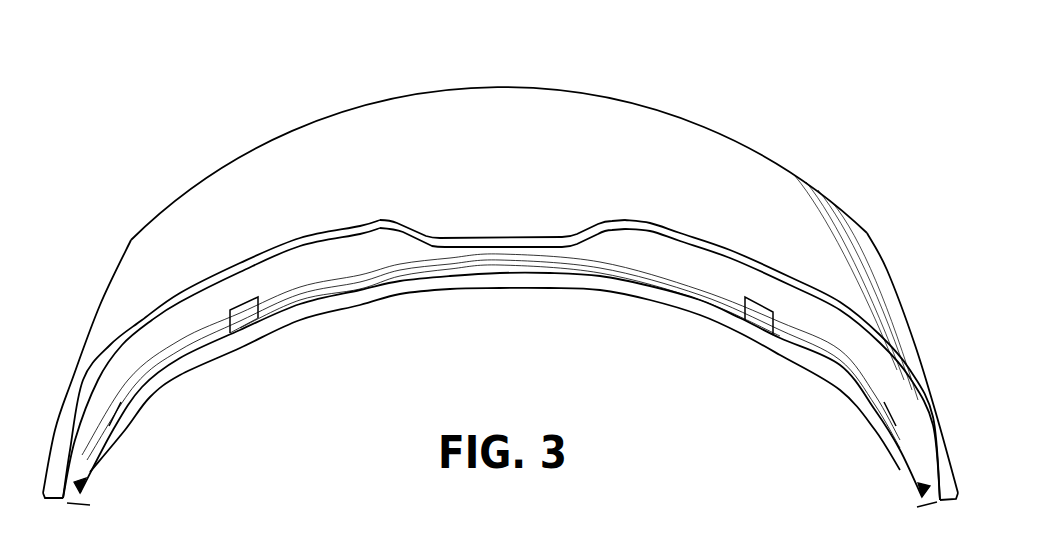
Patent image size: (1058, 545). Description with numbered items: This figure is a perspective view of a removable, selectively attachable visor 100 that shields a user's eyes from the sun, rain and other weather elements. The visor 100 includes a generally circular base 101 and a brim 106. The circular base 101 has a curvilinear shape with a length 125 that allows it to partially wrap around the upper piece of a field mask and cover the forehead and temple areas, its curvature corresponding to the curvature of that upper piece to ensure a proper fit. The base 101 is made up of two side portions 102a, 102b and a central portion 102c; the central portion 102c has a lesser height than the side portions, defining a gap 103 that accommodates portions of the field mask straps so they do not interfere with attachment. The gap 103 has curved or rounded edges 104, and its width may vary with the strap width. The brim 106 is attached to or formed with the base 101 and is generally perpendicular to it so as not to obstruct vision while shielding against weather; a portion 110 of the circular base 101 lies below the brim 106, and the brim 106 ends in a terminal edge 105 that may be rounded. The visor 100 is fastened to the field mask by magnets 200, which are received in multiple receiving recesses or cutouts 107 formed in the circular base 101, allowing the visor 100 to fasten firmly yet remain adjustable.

The visor 100 is at (692, 84).
The circular base 101 is at (698, 258).
The side portion 102a is at (898, 398).
The side portion 102b is at (108, 400).
The central portion 102c is at (497, 263).
The gap 103 is at (470, 237).
The rounded edges 104 is at (536, 237).
The terminal edge 105 is at (607, 93).
The brim 106 is at (405, 115).
The receiving recesses 107 is at (252, 300).
The portion of the circular base 110 is at (370, 290).
The length 125 is at (658, 312).
The magnets 200 is at (244, 318).